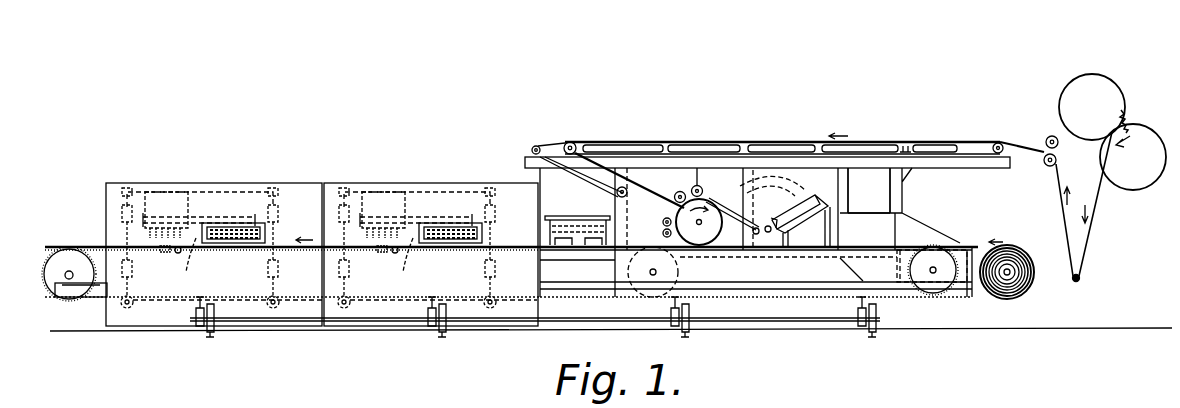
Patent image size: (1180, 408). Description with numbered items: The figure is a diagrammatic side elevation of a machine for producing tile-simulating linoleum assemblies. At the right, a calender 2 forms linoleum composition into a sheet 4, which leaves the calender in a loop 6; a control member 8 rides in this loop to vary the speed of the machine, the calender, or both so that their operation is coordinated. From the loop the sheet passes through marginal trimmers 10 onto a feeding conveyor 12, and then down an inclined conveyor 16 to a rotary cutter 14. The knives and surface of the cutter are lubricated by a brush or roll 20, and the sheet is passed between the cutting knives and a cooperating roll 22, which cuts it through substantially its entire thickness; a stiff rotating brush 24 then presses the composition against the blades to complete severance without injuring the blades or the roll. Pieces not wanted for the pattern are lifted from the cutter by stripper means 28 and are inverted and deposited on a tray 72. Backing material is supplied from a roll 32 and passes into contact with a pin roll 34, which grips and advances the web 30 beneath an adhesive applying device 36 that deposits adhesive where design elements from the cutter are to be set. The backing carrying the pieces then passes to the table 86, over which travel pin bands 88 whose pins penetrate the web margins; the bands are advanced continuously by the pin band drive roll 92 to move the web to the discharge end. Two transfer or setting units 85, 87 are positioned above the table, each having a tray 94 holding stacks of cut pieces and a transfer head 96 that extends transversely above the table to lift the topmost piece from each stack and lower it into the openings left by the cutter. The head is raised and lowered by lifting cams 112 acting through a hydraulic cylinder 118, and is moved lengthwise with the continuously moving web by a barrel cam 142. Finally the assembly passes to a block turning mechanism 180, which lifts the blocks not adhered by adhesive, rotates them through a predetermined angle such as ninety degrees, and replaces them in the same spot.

The calender 2 is at (1137, 97).
The sheet 4 is at (888, 142).
The loop 6 is at (1066, 227).
The control member 8 is at (1072, 282).
The marginal trimmers 10 is at (1046, 138).
The feeding conveyor 12 is at (963, 158).
The rotary cutter 14 is at (703, 208).
The inclined conveyor 16 is at (563, 141).
The brush or roll 20 is at (662, 224).
The cooperating roll 22 is at (676, 195).
The stiff rotating brush 24 is at (697, 185).
The stripper means 28 is at (778, 207).
The web backing material 30 is at (762, 250).
The roll 32 is at (1006, 296).
The pin roll 34 is at (951, 289).
The adhesive applying device 36 is at (867, 205).
The tray 72 is at (818, 199).
The transfer or setting unit 85 is at (426, 172).
The table 86 is at (506, 251).
The transfer or setting unit 87 is at (238, 174).
The pin bands 88 is at (514, 244).
The pin band drive roll 92 is at (69, 254).
The tray 94 is at (238, 246).
The transfer head 96 is at (155, 240).
The lifting cams 112 is at (293, 306).
The hydraulic cylinder 118 is at (293, 272).
The barrel cam 142 is at (292, 267).
The block turning mechanism 180 is at (575, 209).